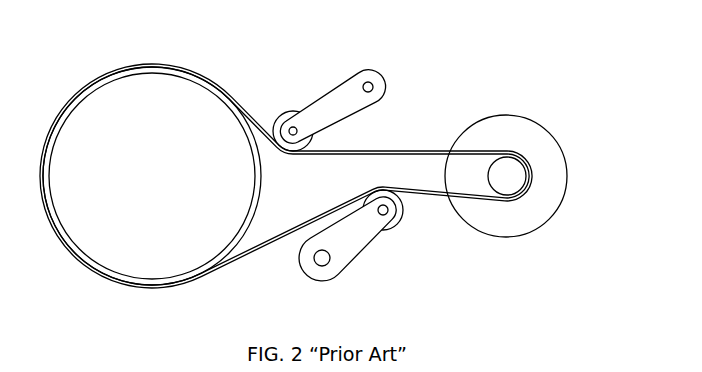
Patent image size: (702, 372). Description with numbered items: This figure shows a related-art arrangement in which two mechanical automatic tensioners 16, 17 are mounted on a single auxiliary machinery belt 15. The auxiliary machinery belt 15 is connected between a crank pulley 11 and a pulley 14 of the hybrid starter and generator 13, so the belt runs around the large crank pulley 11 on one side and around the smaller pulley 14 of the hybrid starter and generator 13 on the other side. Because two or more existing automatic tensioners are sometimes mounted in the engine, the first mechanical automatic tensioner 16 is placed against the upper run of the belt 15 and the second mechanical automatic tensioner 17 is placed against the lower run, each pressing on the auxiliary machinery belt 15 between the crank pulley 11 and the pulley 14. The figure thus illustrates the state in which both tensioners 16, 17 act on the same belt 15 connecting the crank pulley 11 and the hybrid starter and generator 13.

The crank pulley 11 is at (167, 257).
The hybrid starter and generator 13 is at (555, 212).
The pulley of the hybrid starter and generator 14 is at (515, 165).
The auxiliary machinery belt 15 is at (403, 148).
The mechanical automatic tensioner 16 is at (312, 98).
The mechanical automatic tensioner 17 is at (365, 255).